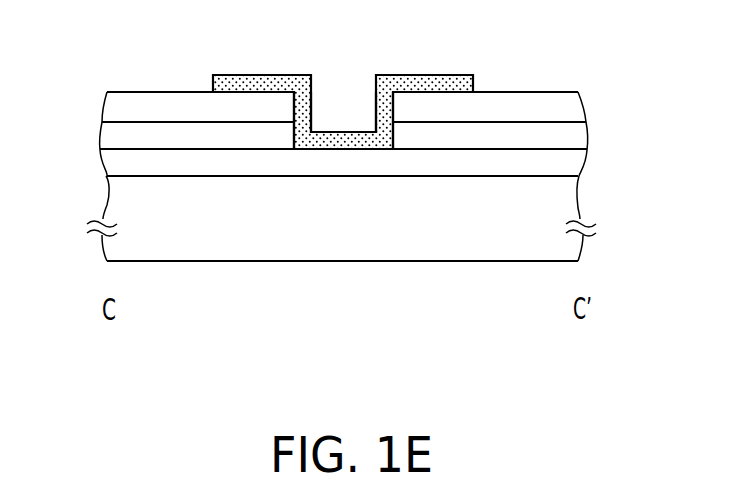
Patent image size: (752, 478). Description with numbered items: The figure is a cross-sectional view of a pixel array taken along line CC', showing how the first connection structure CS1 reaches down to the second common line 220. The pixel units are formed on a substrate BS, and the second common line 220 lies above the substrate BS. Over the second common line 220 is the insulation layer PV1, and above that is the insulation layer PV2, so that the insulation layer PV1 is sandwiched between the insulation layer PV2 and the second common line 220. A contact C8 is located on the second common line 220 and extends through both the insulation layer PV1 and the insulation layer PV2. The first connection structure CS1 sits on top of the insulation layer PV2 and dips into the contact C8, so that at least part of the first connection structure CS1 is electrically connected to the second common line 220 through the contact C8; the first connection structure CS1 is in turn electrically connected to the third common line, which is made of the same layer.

The insulation layer PV2 is at (140, 110).
The insulation layer PV1 is at (143, 138).
The second common line 220 is at (545, 162).
The substrate BS is at (550, 247).
The first connection structure CS1 is at (460, 75).
The contact C8 is at (292, 105).